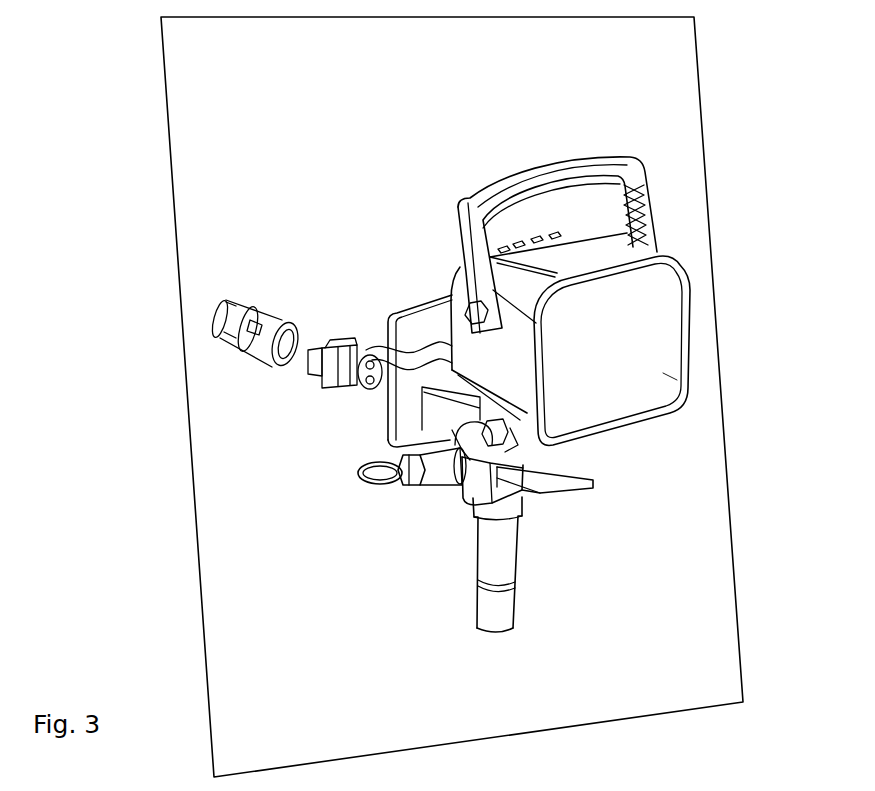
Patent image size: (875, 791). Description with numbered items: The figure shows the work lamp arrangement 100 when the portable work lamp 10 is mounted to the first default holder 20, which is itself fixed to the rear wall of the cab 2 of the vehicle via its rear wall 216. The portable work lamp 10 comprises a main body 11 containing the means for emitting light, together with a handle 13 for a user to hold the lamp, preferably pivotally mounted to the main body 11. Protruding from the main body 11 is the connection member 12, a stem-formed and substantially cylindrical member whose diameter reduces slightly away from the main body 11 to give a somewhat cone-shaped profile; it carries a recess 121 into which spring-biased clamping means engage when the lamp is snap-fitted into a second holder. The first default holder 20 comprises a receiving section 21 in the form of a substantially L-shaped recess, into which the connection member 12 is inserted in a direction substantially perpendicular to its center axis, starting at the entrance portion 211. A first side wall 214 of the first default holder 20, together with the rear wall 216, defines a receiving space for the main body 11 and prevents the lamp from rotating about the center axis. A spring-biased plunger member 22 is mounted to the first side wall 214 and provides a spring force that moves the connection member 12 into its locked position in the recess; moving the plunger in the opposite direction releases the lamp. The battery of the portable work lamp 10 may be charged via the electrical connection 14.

The cab 2 is at (174, 188).
The work lamp arrangement 100 is at (745, 178).
The portable work lamp 10 is at (695, 318).
The main body 11 is at (688, 366).
The connection member 12 is at (589, 564).
The recess 121 is at (513, 586).
The handle 13 is at (562, 155).
The electrical connection 14 is at (217, 305).
The first default holder 20 is at (445, 298).
The receiving section 21 is at (473, 518).
The entrance portion 211 is at (533, 488).
The first side wall 214 is at (466, 468).
The rear wall 216 is at (405, 298).
The spring-biased plunger member 22 is at (355, 475).